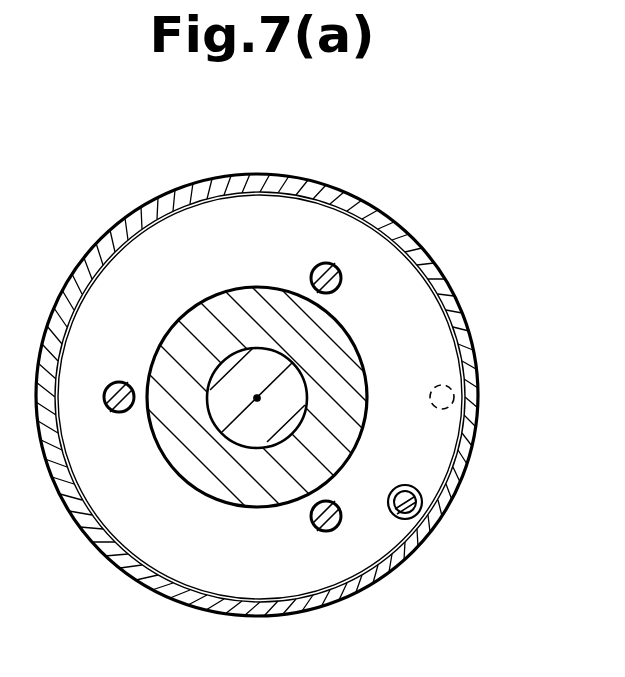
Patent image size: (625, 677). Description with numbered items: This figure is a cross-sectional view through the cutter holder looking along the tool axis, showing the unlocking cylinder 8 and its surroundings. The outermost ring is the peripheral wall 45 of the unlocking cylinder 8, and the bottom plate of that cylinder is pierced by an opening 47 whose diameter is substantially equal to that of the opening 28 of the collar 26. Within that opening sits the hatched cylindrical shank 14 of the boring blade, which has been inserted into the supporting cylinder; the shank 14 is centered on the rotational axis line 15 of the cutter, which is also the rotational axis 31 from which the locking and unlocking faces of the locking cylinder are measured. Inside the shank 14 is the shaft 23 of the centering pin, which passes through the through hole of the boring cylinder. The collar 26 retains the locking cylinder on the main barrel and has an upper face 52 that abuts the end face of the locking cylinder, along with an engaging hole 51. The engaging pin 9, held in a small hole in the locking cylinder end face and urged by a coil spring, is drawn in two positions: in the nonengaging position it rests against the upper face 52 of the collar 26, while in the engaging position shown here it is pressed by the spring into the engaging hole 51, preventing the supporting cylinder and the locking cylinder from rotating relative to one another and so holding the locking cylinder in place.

The unlocking cylinder 8 is at (435, 260).
The peripheral wall 45 is at (463, 308).
The collar 26 is at (286, 386).
The opening 28 is at (235, 302).
The shank 14 is at (345, 354).
The opening 47 is at (182, 480).
The shaft 23 is at (263, 363).
The rotational axis 31 is at (292, 398).
The rotational axis line 15 is at (258, 398).
The engaging hole 51 is at (397, 518).
The upper face 52 is at (436, 451).
The engaging pin 9 is at (452, 394).